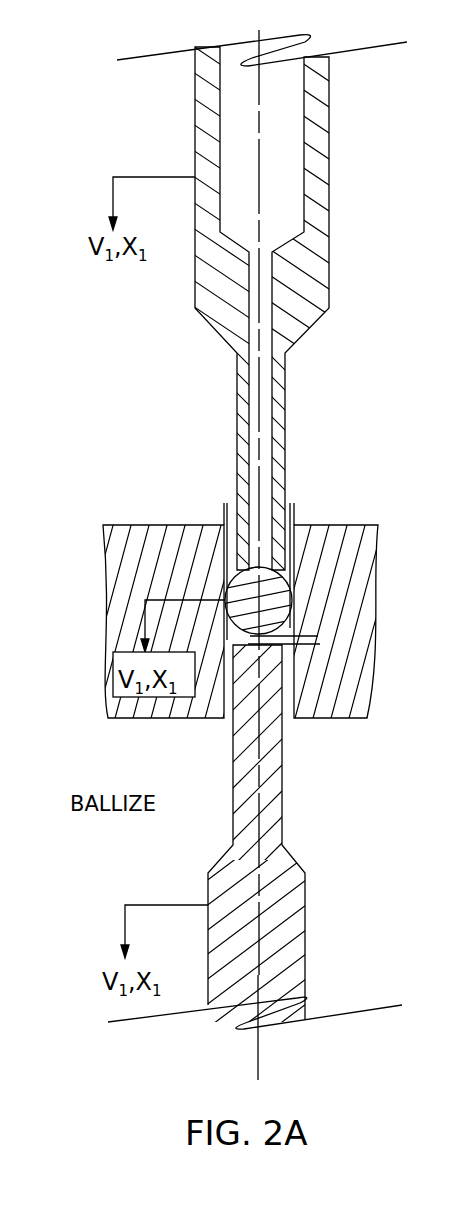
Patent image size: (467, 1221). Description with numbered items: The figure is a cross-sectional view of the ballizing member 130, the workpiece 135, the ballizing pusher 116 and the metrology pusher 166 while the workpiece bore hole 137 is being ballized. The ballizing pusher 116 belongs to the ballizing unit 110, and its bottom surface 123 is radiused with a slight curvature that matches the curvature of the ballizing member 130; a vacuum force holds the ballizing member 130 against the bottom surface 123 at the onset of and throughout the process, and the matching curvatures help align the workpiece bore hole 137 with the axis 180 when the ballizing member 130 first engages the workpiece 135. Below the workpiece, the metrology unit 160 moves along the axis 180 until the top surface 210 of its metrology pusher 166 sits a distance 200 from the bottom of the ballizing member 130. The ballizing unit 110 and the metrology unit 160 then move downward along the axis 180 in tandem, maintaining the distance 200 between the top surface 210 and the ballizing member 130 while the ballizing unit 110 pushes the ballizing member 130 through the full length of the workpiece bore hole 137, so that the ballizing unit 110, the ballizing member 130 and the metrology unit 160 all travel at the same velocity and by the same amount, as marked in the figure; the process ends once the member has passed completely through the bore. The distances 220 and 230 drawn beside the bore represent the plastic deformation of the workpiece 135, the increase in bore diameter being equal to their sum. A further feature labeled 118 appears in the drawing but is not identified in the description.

The ballizing unit 110 is at (224, 324).
The ballizing pusher 116 is at (329, 147).
The capillary bore 118 is at (272, 285).
The distance 220 is at (226, 500).
The distance 230 is at (293, 500).
The ballizing member 130 is at (240, 645).
The bottom surface 123 is at (278, 605).
The distance 200 is at (320, 647).
The top surface 210 is at (233, 718).
The workpiece bore hole 137 is at (310, 719).
The workpiece 135 is at (358, 719).
The metrology unit 160 is at (209, 840).
The metrology pusher 166 is at (306, 943).
The axis 180 is at (258, 1057).